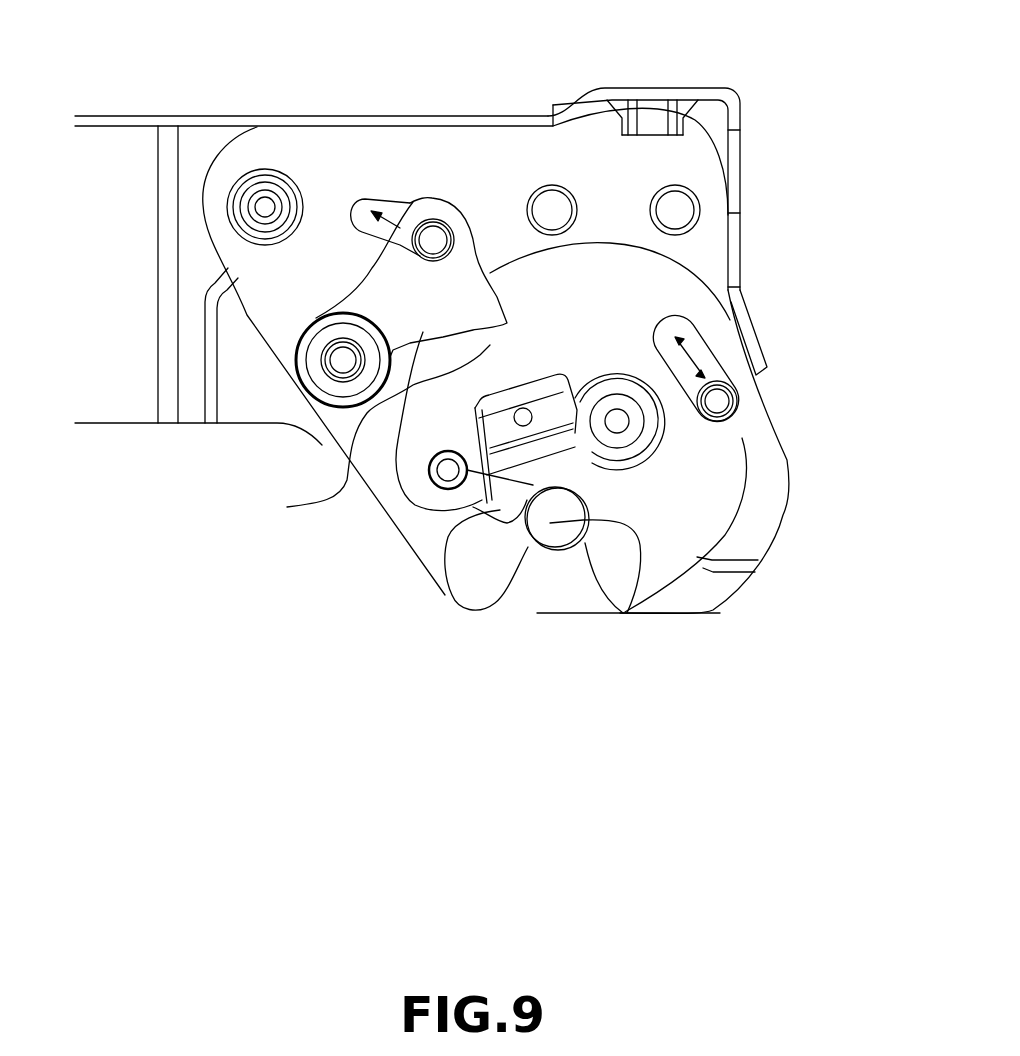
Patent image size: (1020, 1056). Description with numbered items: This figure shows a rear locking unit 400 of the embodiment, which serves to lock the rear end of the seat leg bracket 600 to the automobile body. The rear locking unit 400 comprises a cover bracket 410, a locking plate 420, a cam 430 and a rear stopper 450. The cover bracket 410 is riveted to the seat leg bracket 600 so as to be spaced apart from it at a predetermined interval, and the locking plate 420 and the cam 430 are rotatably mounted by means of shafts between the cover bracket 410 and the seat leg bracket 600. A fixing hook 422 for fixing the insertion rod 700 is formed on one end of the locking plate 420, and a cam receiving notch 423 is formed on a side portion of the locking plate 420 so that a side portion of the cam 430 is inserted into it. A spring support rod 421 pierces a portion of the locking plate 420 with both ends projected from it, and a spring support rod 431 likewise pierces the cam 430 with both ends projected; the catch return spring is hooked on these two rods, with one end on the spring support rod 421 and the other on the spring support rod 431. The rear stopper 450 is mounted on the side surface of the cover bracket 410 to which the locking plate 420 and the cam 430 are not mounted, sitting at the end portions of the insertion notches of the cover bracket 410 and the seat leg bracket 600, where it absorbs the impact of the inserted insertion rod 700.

The seat leg bracket 600 is at (147, 116).
The cover bracket 410 is at (217, 157).
The spring support rod 431 is at (430, 240).
The cam 430 is at (463, 203).
The rear locking unit 400 is at (775, 252).
The locking plate 420 is at (733, 288).
The spring support rod 421 is at (717, 404).
The cam receiving notch 423 is at (287, 507).
The rear stopper 450 is at (445, 595).
The fixing hook 422 is at (550, 593).
The insertion rod 700 is at (630, 615).